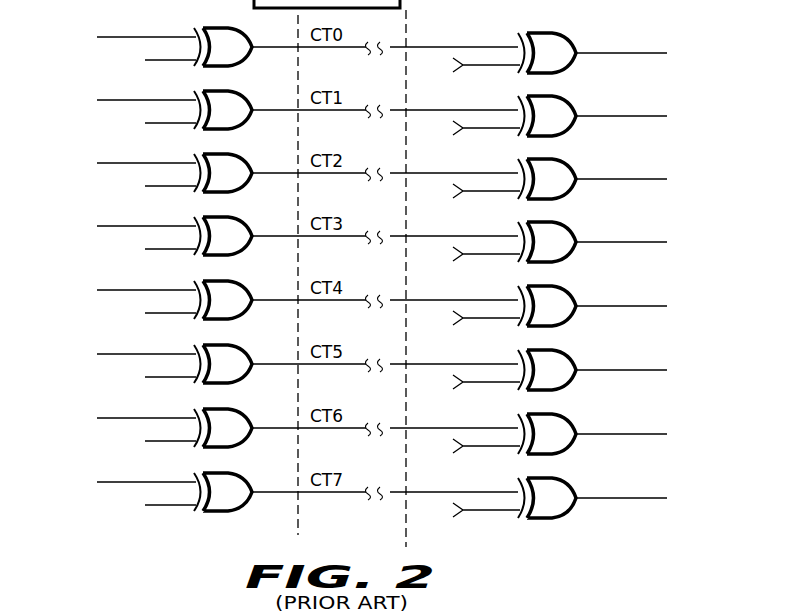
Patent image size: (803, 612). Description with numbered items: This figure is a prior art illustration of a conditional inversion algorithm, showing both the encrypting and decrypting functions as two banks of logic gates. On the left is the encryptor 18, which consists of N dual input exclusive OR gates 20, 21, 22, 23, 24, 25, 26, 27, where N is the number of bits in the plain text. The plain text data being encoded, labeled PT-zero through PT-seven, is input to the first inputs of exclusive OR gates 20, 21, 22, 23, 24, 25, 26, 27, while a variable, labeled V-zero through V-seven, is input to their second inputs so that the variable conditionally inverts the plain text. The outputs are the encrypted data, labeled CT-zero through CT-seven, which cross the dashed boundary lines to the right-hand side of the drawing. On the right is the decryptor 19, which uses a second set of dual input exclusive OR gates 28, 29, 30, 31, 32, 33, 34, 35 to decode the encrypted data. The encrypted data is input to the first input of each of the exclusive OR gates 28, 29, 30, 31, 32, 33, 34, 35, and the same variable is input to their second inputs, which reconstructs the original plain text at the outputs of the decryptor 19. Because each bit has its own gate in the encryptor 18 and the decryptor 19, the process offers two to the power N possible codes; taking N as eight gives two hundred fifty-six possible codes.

The encryptor 18 is at (168, 27).
The decryptor 19 is at (649, 33).
The exclusive OR gate 20 is at (243, 60).
The exclusive OR gate 21 is at (243, 123).
The exclusive OR gate 22 is at (243, 186).
The exclusive OR gate 23 is at (243, 249).
The exclusive OR gate 24 is at (243, 313).
The exclusive OR gate 25 is at (243, 377).
The exclusive OR gate 26 is at (243, 441).
The exclusive OR gate 27 is at (243, 505).
The exclusive OR gate 28 is at (575, 26).
The exclusive OR gate 29 is at (575, 89).
The exclusive OR gate 30 is at (575, 152).
The exclusive OR gate 31 is at (575, 215).
The exclusive OR gate 32 is at (575, 279).
The exclusive OR gate 33 is at (575, 343).
The exclusive OR gate 34 is at (575, 407).
The exclusive OR gate 35 is at (575, 471).